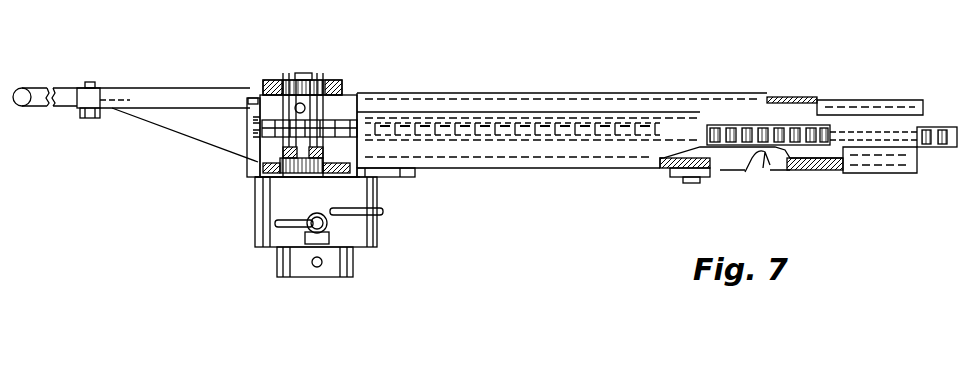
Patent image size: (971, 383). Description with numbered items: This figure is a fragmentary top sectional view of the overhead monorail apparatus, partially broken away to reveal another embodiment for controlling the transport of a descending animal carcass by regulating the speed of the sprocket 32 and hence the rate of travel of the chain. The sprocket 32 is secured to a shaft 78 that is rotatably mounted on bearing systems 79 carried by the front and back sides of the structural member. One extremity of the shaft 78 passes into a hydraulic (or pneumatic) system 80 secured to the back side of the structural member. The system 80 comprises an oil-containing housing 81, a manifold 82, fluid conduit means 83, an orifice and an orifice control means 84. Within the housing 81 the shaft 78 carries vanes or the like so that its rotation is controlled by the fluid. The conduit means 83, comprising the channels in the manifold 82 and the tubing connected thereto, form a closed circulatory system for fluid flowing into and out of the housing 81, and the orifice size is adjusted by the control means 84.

The sprocket 32 is at (285, 80).
The shaft 78 is at (308, 75).
The bearing systems 79 is at (320, 80).
The hydraulic system 80 is at (313, 247).
The fluid-containing housing 81 is at (267, 242).
The manifold 82 is at (293, 263).
The fluid conduit means 83 is at (383, 213).
The orifice control means 84 is at (270, 230).